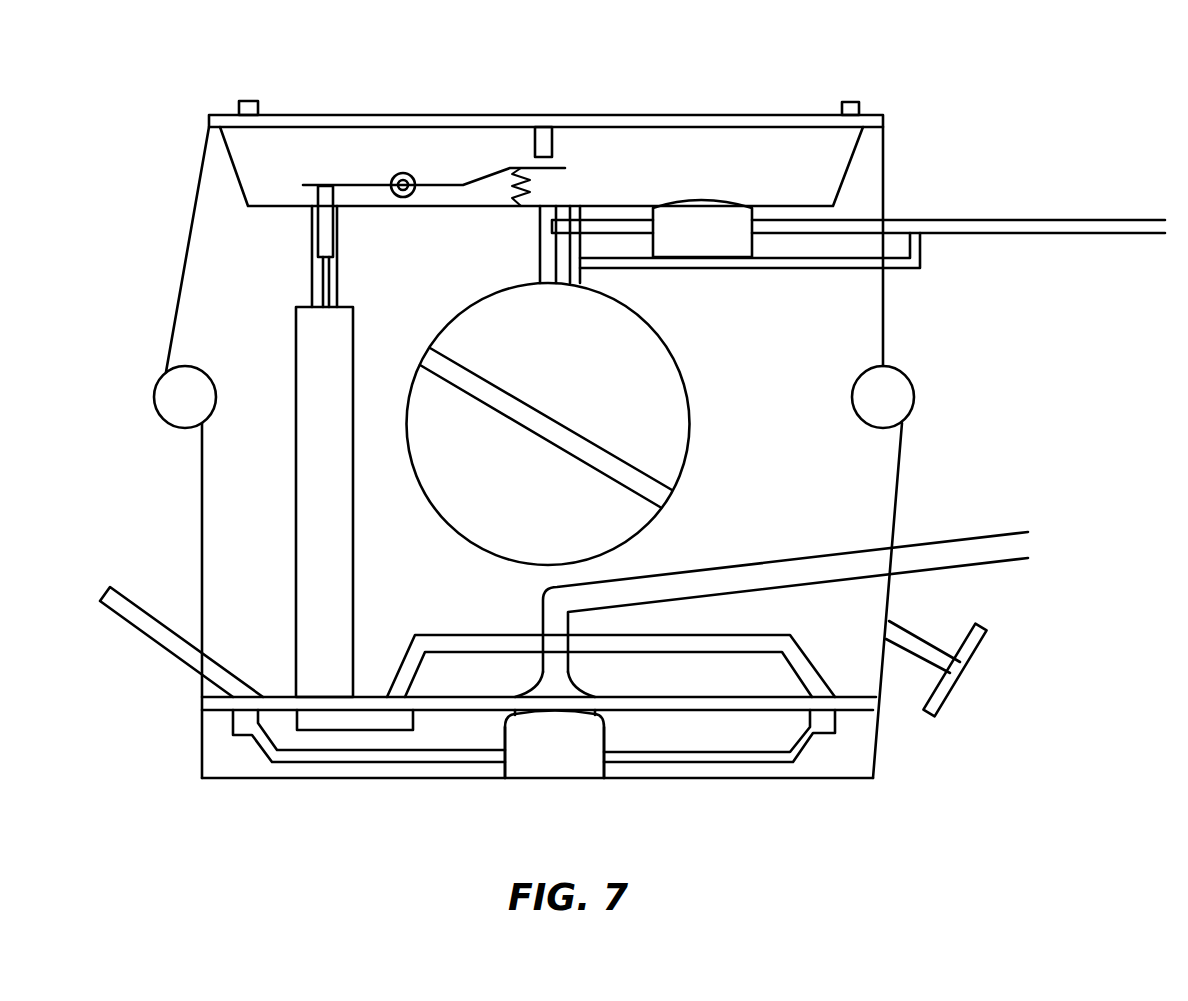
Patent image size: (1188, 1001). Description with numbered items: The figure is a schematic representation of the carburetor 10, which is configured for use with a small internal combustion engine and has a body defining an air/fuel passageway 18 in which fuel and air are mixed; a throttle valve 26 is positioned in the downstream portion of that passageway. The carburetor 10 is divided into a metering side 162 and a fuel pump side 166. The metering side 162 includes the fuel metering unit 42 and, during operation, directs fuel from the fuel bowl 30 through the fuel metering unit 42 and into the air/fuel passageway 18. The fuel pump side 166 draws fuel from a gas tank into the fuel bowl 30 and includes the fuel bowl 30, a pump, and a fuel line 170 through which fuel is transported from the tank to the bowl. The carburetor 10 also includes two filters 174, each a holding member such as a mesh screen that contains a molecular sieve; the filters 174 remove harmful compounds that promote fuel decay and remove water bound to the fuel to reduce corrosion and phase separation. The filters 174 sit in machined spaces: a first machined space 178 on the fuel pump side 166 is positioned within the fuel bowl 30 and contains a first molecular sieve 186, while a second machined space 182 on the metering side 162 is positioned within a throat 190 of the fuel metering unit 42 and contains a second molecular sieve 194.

The carburetor 10 is at (367, 72).
The metering side 162 is at (380, 170).
The throat 190 is at (528, 246).
The second machined space 182 is at (650, 215).
The second molecular sieve 194 is at (753, 228).
The filters 174 is at (715, 180).
The fuel metering unit 42 is at (602, 276).
The air/fuel passageway 18 is at (437, 505).
The fuel line 170 is at (967, 537).
The fuel bowl 30 is at (592, 683).
The throttle valve 26 is at (973, 658).
The fuel pump side 166 is at (498, 724).
The first machined space 178 is at (550, 773).
The first molecular sieve 186 is at (605, 768).